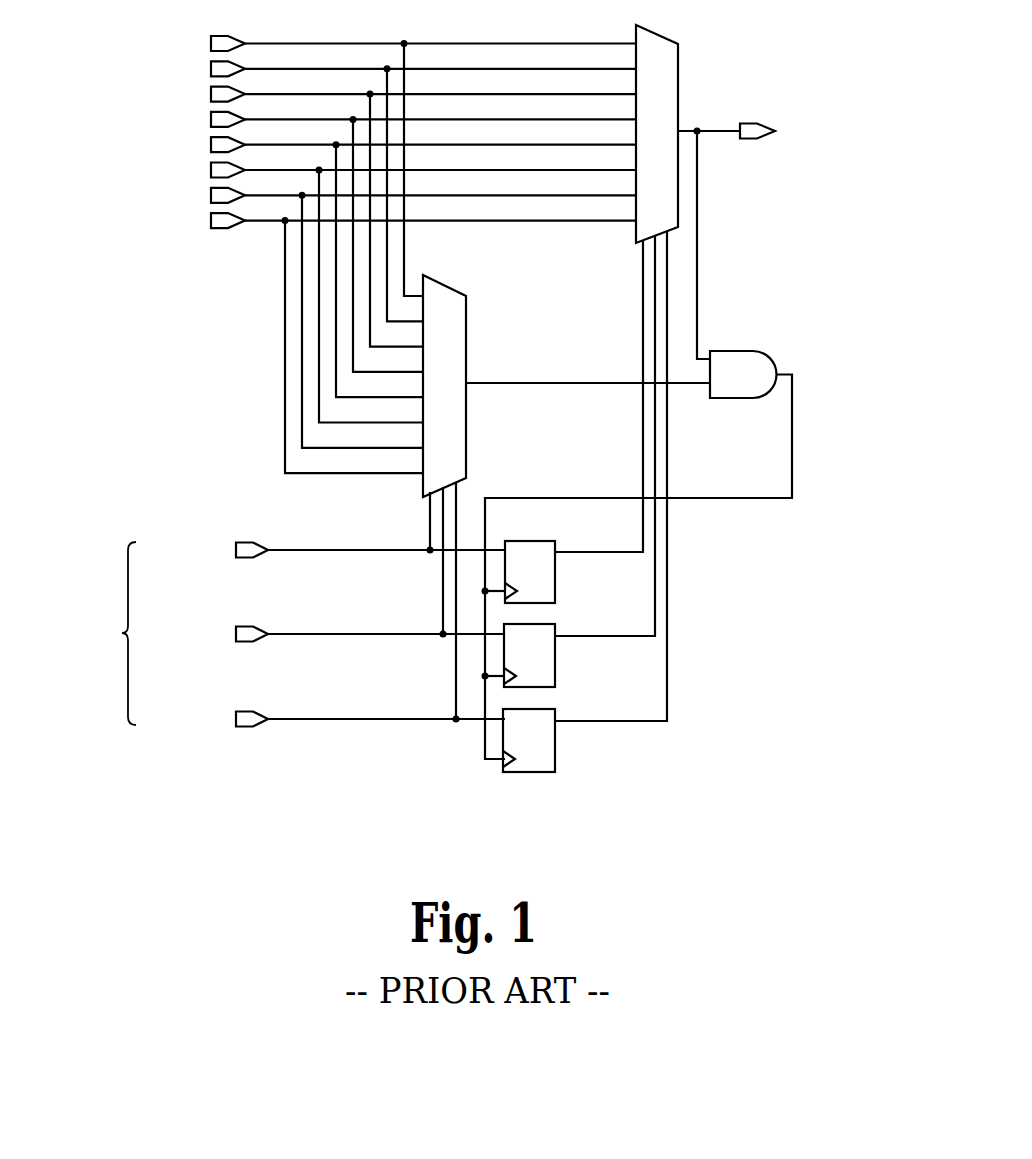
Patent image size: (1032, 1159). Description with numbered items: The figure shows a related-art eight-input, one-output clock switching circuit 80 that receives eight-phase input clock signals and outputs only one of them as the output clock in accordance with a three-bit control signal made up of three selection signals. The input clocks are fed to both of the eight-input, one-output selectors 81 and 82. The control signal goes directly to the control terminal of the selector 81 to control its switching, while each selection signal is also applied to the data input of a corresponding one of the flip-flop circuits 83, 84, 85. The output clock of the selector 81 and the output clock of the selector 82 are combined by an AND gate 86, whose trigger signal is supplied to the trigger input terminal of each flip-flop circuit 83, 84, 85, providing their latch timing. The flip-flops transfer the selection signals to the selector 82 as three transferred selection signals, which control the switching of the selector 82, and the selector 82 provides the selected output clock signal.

The clock switching circuit 80 is at (835, 85).
The selector 81 is at (466, 333).
The selector 82 is at (678, 82).
The flip-flop circuit 83 is at (555, 578).
The flip-flop circuit 84 is at (555, 663).
The flip-flop circuit 85 is at (555, 748).
The AND gate 86 is at (742, 351).